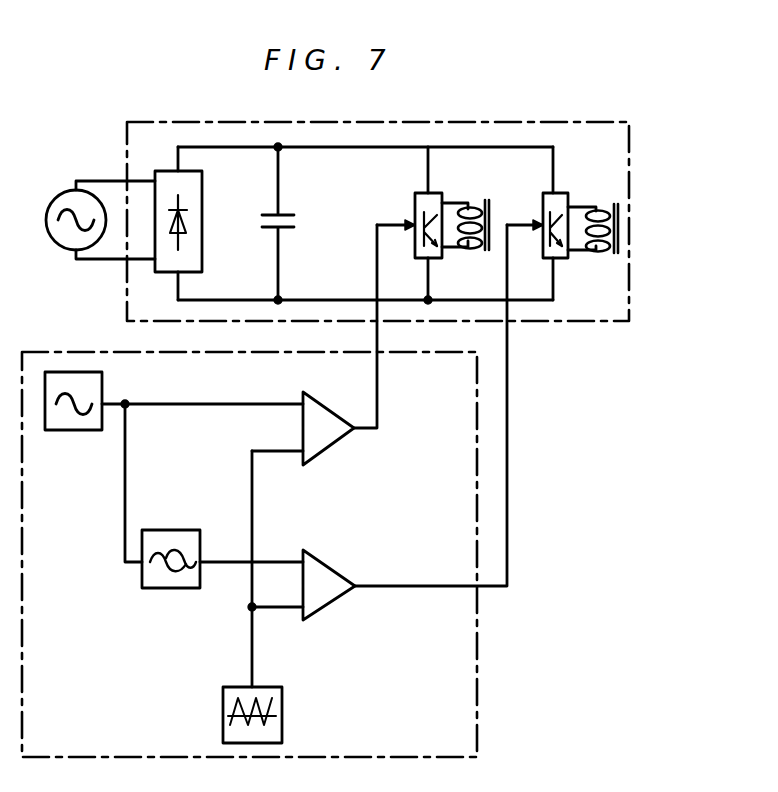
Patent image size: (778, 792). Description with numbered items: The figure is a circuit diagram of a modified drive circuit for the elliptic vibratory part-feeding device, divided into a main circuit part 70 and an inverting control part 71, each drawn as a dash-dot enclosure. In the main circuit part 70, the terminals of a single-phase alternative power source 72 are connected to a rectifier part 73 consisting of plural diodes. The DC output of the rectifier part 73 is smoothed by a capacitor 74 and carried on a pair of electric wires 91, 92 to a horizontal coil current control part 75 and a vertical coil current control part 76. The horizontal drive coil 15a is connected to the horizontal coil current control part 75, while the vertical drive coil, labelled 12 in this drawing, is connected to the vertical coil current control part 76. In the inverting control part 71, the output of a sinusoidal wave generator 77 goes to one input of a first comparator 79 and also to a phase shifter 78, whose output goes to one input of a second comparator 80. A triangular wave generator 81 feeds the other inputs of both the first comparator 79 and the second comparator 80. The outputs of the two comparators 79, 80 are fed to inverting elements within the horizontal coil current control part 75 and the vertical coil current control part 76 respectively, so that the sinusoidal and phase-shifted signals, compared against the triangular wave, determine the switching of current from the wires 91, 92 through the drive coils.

The main circuit part 70 is at (636, 178).
The inverting control part 71 is at (481, 448).
The single-phase alternative power (AC) source 72 is at (74, 190).
The rectifier part 73 is at (193, 184).
The capacitor 74 is at (285, 213).
The horizontal coil current control part 75 is at (425, 202).
The vertical coil current control part 76 is at (560, 250).
The sinusoidal wave generator 77 is at (78, 420).
The phase shifter 78 is at (170, 540).
The first comparator 79 is at (330, 416).
The second comparator 80 is at (330, 566).
The triangular wave generator 81 is at (268, 697).
The electric wire 91 is at (359, 148).
The electric wire 92 is at (327, 300).
The horizontal drive coil 15a is at (470, 206).
The electromagnet coil 12 is at (598, 206).